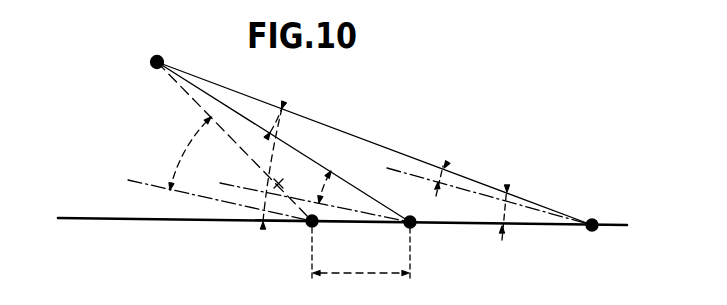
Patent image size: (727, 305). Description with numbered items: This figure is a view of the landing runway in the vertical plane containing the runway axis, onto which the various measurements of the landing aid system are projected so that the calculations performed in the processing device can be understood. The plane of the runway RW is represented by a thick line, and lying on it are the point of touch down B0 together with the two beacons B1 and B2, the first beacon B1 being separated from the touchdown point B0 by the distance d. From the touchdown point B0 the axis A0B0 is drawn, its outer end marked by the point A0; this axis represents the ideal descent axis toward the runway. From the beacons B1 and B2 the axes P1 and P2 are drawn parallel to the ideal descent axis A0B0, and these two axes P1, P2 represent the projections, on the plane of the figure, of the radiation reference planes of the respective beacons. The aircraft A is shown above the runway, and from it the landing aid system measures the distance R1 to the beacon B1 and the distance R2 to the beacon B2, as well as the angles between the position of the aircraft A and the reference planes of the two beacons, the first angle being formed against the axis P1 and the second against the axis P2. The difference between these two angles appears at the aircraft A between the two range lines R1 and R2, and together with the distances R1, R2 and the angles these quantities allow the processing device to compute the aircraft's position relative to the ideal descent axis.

The aircraft A is at (150, 62).
The ideal descent axis point A0 is at (134, 178).
The road wall / reference line RW is at (167, 218).
The point of touch down B0 is at (312, 227).
The beacon B1 is at (412, 228).
The beacon B2 is at (594, 231).
The axis P1 is at (247, 188).
The axis P2 is at (432, 178).
The distance R1 is at (283, 142).
The distance R2 is at (374, 143).
The distance between B0 and B1 d is at (361, 255).